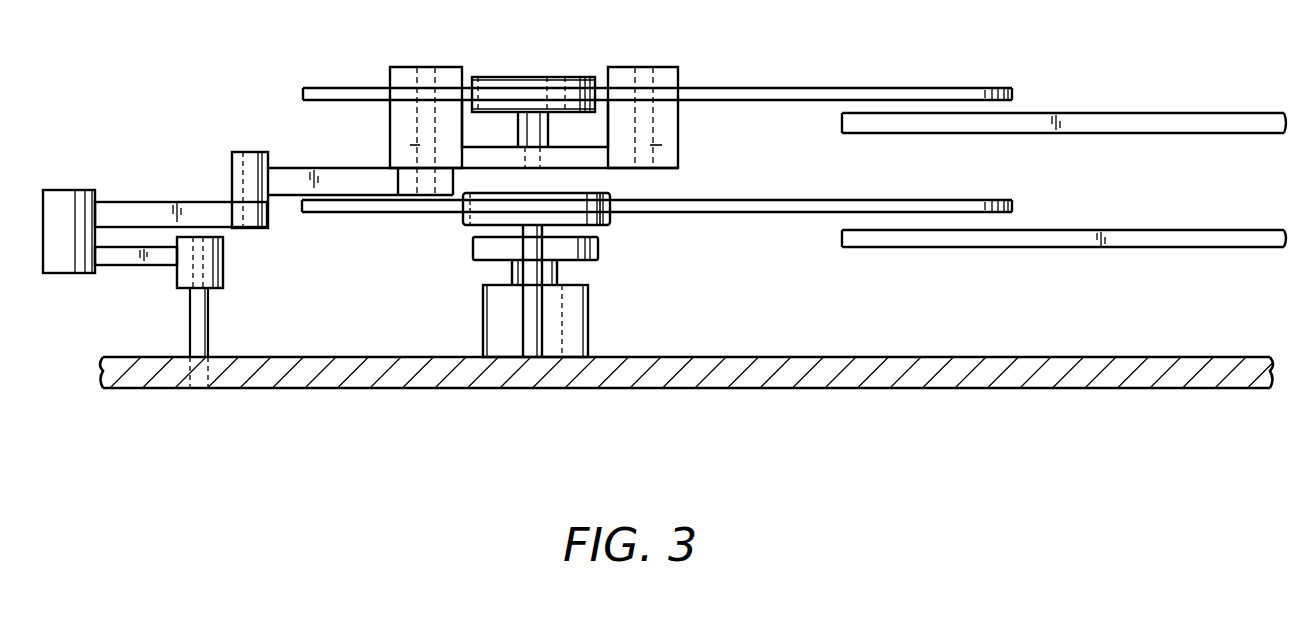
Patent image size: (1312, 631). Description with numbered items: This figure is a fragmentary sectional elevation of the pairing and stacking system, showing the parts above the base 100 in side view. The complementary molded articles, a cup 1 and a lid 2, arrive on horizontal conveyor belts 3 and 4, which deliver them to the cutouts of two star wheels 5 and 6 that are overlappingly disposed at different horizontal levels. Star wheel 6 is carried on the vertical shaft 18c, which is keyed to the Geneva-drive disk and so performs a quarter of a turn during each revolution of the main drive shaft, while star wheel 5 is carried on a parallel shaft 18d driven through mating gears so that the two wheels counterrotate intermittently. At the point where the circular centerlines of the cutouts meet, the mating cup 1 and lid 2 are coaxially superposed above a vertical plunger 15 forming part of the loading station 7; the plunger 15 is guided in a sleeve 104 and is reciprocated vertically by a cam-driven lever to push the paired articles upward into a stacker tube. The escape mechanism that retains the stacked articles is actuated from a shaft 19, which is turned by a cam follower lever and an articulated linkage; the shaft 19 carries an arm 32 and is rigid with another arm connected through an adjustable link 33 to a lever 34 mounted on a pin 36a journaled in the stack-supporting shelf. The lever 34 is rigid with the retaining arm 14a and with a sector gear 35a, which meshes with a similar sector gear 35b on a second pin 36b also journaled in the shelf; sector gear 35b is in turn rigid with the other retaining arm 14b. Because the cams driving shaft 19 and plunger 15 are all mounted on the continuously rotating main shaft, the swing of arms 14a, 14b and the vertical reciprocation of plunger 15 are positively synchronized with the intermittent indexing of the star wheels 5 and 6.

The cup 1 is at (465, 222).
The lid 2 is at (570, 77).
The conveyor belt 3 is at (1190, 220).
The conveyor belt 4 is at (1170, 125).
The star wheel 5 is at (968, 200).
The star wheel 6 is at (898, 88).
The loading station 7 is at (622, 197).
The retaining arm 14a is at (440, 70).
The retaining arm 14b is at (663, 70).
The plunger 15 is at (598, 253).
The shaft 18c is at (518, 75).
The shaft 18d is at (530, 268).
The shaft 19 is at (190, 325).
The arm 32 is at (138, 255).
The adjustable link 33 is at (148, 208).
The lever 34 is at (287, 170).
The sector gear 35a is at (390, 133).
The sector gear 35b is at (680, 135).
The pin 36a is at (418, 145).
The pin 36b is at (653, 147).
The base 100 is at (928, 390).
The sleeve 104 is at (590, 321).